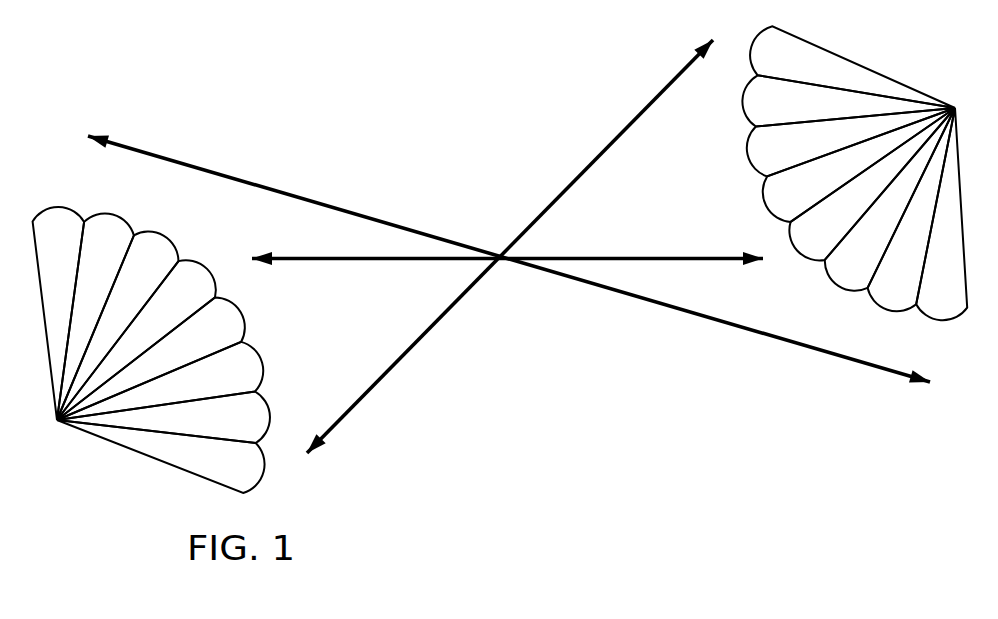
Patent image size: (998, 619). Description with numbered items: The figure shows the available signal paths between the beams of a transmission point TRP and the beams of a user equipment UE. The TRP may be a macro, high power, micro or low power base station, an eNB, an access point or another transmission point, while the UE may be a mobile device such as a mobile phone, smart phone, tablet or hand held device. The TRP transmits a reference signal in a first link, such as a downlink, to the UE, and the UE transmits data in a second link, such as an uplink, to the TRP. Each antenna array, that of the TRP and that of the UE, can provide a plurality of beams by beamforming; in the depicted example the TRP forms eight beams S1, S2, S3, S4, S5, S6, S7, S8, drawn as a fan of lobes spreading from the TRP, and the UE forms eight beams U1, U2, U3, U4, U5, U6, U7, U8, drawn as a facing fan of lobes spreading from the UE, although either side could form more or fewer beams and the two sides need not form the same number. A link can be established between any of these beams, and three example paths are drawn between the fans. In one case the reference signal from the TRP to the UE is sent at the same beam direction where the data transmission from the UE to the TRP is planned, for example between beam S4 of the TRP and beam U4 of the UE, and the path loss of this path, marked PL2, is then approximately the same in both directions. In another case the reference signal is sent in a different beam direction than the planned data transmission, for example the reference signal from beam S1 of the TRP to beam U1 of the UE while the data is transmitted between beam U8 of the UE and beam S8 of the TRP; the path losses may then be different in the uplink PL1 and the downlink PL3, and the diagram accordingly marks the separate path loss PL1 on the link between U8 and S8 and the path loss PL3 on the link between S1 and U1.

The transmission point TRP is at (159, 267).
The user equipment UE is at (840, 253).
The beam S1 of the TRP S1 is at (59, 267).
The beam S2 of the TRP S2 is at (95, 300).
The beam S3 of the TRP S3 is at (119, 314).
The beam S4 of the TRP S4 is at (143, 333).
The beam S5 of the TRP S5 is at (161, 353).
The beam S6 of the TRP S6 is at (173, 380).
The beam S7 of the TRP S7 is at (178, 418).
The beam S8 of the TRP S8 is at (177, 456).
The beam U1 of the UE U1 is at (941, 255).
The beam U2 of the UE U2 is at (911, 227).
The beam U3 of the UE U3 is at (888, 212).
The beam U4 of the UE U4 is at (864, 193).
The beam U5 of the UE U5 is at (850, 167).
The beam U6 of the UE U6 is at (836, 142).
The beam U7 of the UE U7 is at (834, 100).
The beam U8 of the UE U8 is at (838, 64).
The path loss PL1 is at (510, 246).
The path loss PL2 is at (507, 247).
The path loss PL3 is at (509, 258).